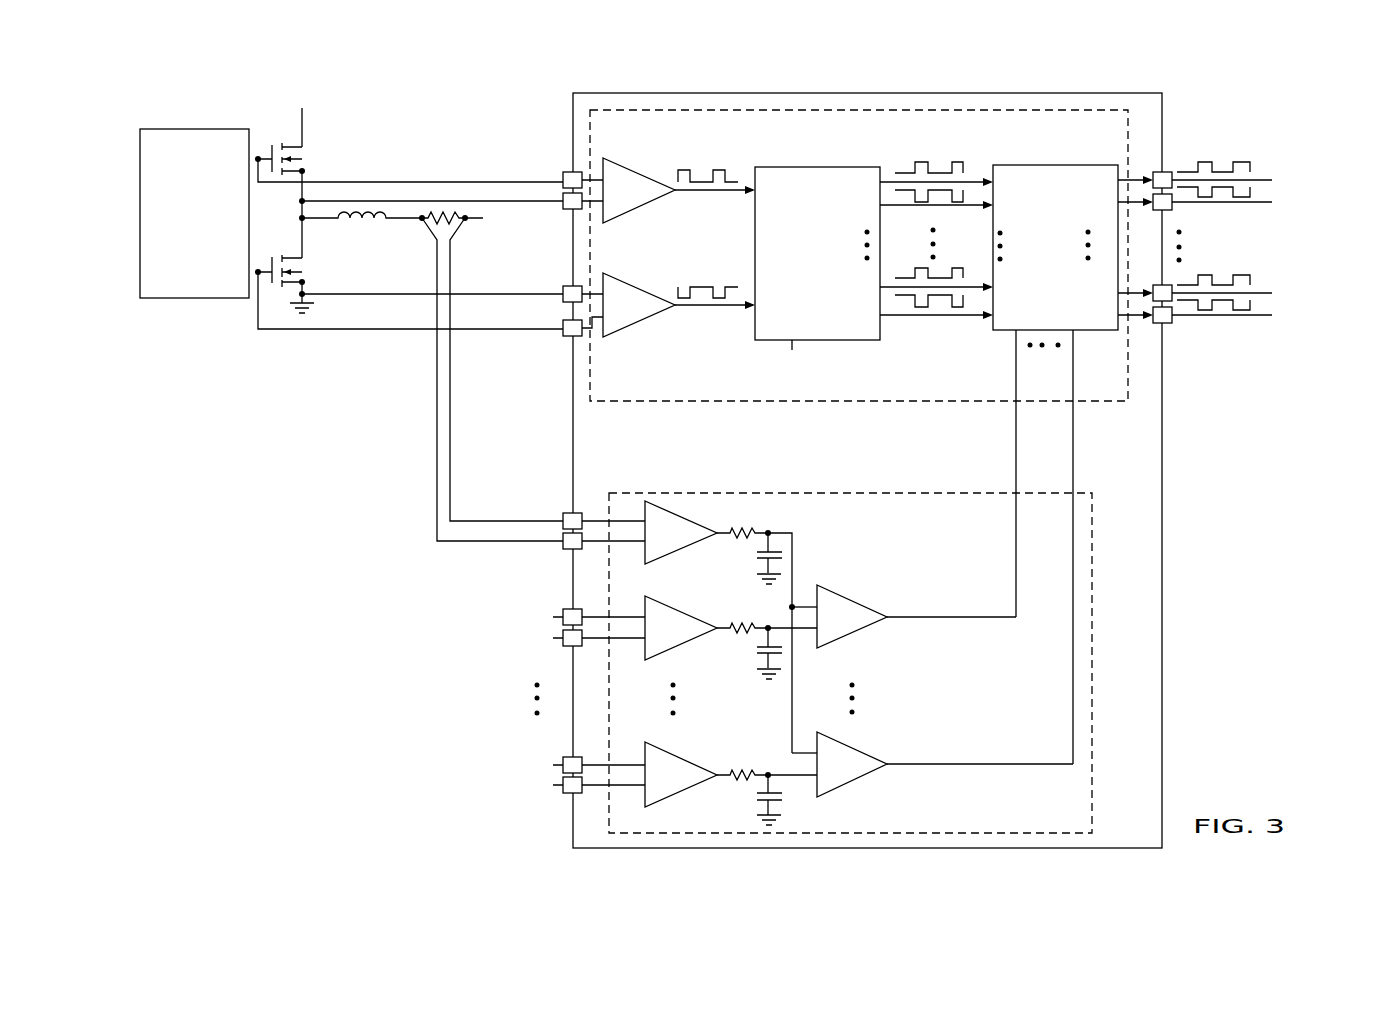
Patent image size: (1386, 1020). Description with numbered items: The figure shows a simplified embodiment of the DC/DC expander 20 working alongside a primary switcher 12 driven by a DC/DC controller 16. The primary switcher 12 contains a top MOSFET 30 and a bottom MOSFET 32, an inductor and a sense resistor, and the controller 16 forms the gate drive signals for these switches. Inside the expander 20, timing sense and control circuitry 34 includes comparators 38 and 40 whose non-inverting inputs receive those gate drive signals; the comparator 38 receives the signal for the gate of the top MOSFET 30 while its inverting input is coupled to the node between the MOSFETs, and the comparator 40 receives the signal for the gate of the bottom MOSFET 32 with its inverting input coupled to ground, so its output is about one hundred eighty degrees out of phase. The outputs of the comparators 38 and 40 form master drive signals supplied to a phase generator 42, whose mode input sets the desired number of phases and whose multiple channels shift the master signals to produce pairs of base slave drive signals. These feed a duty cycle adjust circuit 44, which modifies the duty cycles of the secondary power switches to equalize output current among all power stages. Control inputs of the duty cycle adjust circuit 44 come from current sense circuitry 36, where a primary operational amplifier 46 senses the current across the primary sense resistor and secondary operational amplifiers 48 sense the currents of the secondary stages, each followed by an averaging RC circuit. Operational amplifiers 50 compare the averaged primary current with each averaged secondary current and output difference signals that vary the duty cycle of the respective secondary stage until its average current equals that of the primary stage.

The primary switcher 12 is at (387, 61).
The DC/DC controller 16 is at (195, 300).
The DC/DC expander 20 is at (1163, 112).
The top MOSFET 30 is at (308, 157).
The bottom MOSFET 32 is at (308, 270).
The timing sense and control circuitry 34 is at (947, 403).
The current sense circuitry 36 is at (1093, 633).
The comparator 38 is at (642, 172).
The comparator 40 is at (642, 288).
The phase generator 42 is at (755, 252).
The duty cycle adjust circuit 44 is at (1055, 165).
The primary operational amplifier 46 is at (685, 518).
The secondary operational amplifier 48 is at (685, 610).
The operational amplifier 50 is at (858, 597).